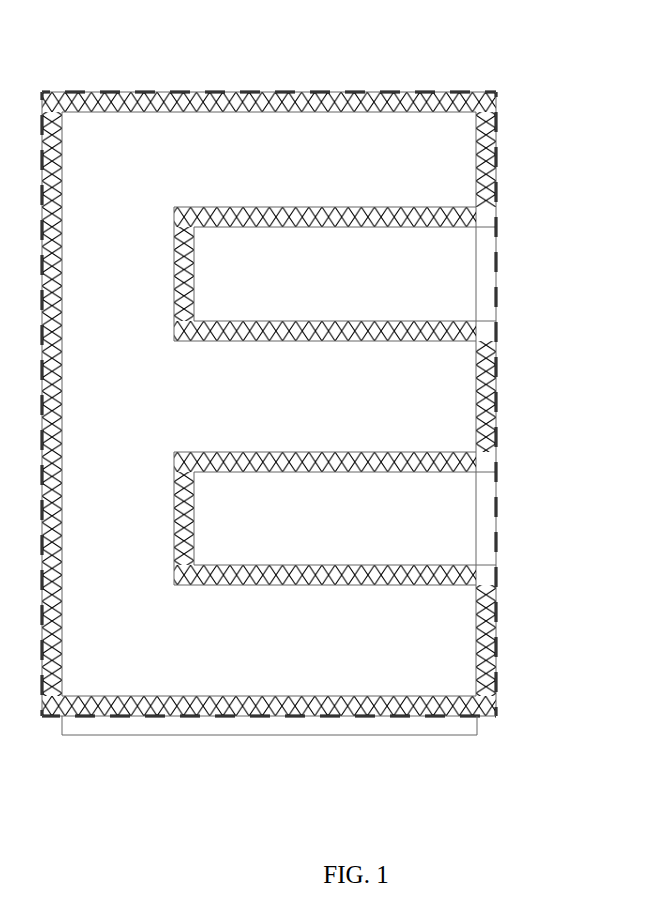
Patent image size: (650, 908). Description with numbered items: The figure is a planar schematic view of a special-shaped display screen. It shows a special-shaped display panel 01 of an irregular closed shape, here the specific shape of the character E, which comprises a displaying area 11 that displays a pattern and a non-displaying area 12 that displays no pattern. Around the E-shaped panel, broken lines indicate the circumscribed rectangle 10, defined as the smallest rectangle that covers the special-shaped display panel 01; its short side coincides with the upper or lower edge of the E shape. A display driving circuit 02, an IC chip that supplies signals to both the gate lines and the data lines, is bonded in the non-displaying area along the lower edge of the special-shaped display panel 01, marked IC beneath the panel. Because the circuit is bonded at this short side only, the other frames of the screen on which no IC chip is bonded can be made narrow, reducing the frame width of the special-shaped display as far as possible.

The special-shaped display panel 01 is at (299, 92).
The display driving circuit 02 is at (408, 727).
The circumscribed rectangle 10 is at (497, 295).
The displaying area 11 is at (163, 130).
The non-displaying area 12 is at (392, 212).